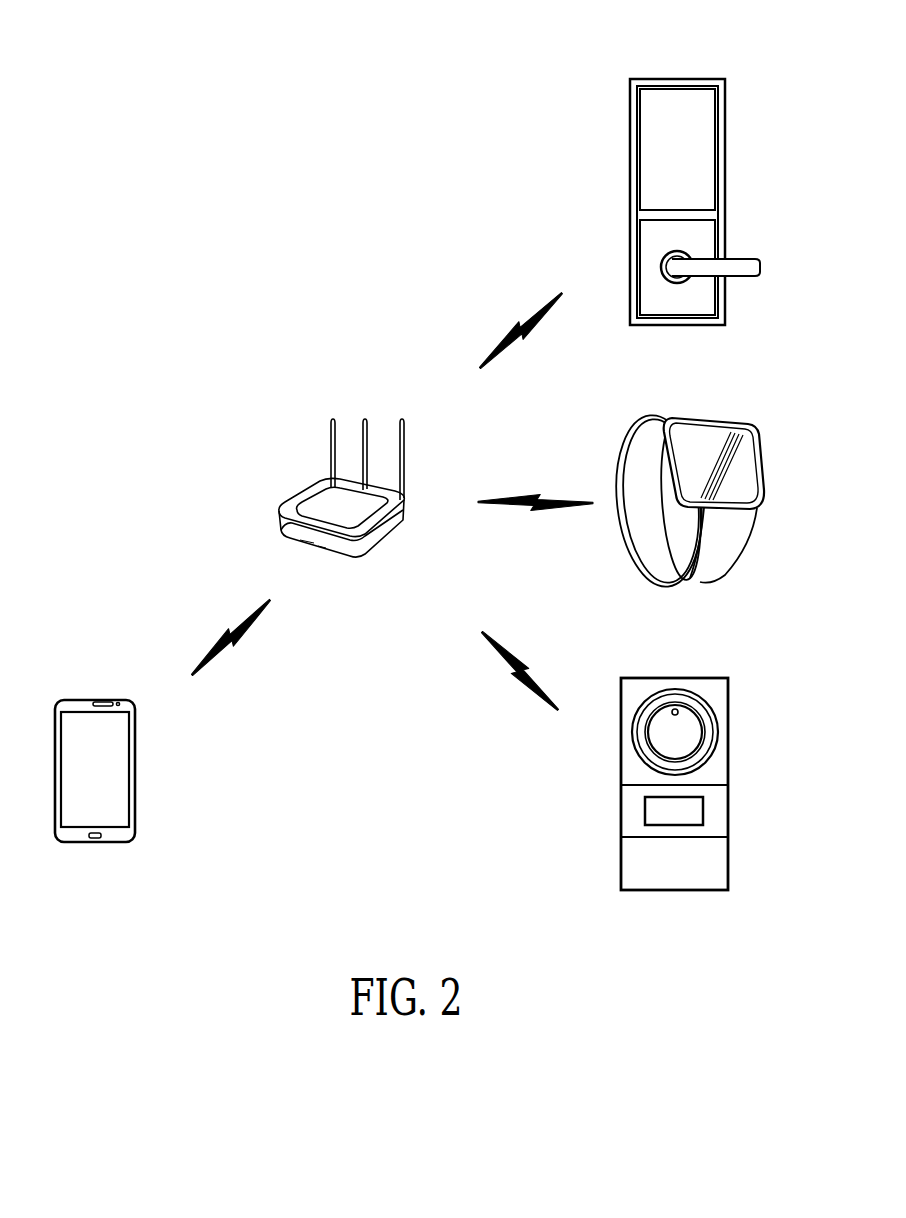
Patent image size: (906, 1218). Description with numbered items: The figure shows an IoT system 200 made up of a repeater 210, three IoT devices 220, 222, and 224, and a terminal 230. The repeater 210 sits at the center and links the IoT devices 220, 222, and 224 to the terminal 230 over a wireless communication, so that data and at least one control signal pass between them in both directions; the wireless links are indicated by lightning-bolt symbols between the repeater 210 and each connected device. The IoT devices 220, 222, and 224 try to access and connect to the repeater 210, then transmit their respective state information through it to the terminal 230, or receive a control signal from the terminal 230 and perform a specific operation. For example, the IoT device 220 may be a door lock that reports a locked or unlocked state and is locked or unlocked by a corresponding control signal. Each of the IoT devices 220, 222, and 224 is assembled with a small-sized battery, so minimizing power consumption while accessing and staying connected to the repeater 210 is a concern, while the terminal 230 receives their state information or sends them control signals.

The IoT system 200 is at (108, 200).
The repeater 210 is at (403, 420).
The IoT device 220 is at (699, 79).
The IoT device 222 is at (728, 421).
The IoT device 224 is at (697, 678).
The terminal 230 is at (109, 700).